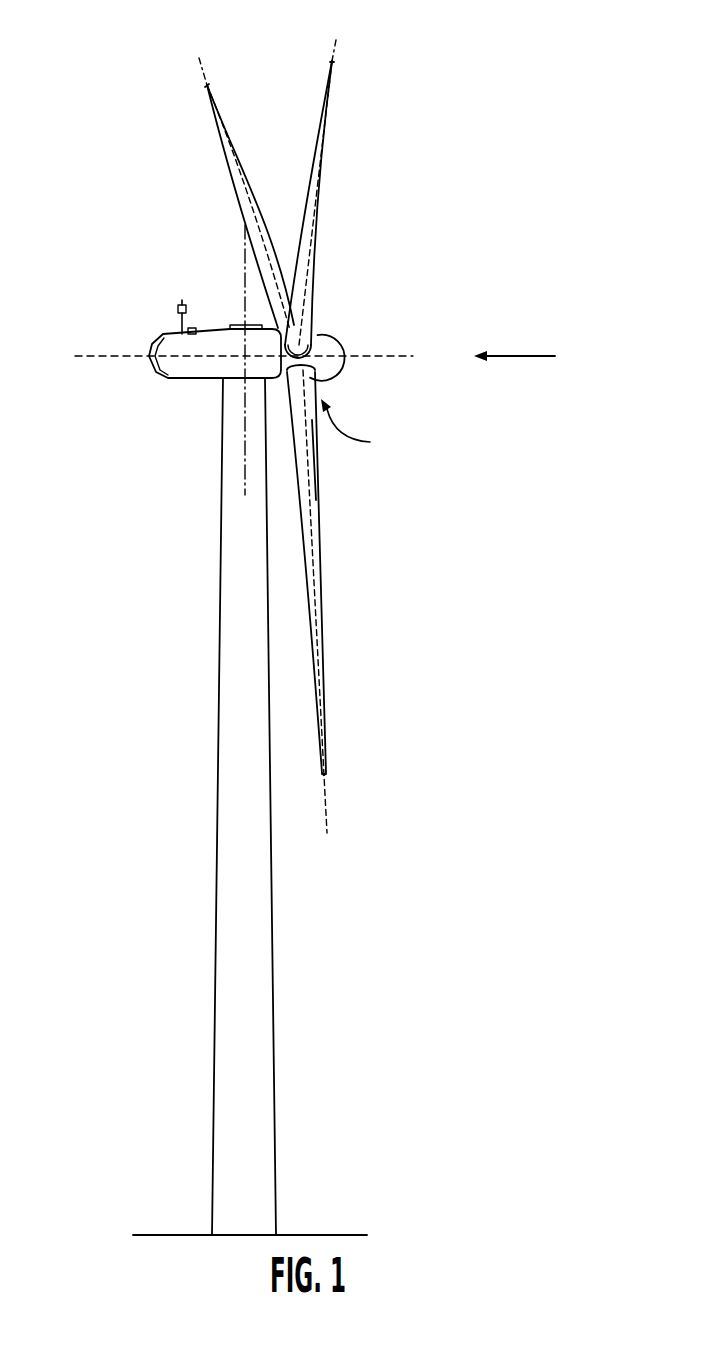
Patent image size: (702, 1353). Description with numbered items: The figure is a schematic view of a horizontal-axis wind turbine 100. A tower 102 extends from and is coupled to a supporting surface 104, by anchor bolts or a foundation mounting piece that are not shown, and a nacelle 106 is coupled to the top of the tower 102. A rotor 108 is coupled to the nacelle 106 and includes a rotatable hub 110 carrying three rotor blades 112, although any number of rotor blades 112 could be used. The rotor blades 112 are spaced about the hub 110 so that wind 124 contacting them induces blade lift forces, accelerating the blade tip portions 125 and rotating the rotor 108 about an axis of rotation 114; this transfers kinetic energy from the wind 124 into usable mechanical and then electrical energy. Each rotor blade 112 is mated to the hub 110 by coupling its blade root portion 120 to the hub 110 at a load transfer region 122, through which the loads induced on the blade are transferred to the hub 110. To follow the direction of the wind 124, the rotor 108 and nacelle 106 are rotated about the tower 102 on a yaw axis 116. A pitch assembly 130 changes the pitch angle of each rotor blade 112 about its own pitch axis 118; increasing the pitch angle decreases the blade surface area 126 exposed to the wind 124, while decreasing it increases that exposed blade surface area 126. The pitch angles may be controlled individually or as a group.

The wind turbine 100 is at (114, 40).
The tower 102 is at (215, 978).
The supporting surface 104 is at (183, 1235).
The nacelle 106 is at (197, 383).
The rotor 108 is at (290, 440).
The rotatable hub 110 is at (328, 350).
The rotor blades 112 is at (250, 185).
The axis of rotation 114 is at (382, 358).
The yaw axis 116 is at (243, 293).
The pitch axis 118 is at (203, 68).
The blade root portion 120 is at (312, 440).
The load transfer regions 122 is at (310, 337).
The wind 124 is at (517, 357).
The blade tip portion 125 is at (205, 88).
The blade surface area 126 is at (315, 303).
The pitch assembly 130 is at (364, 429).